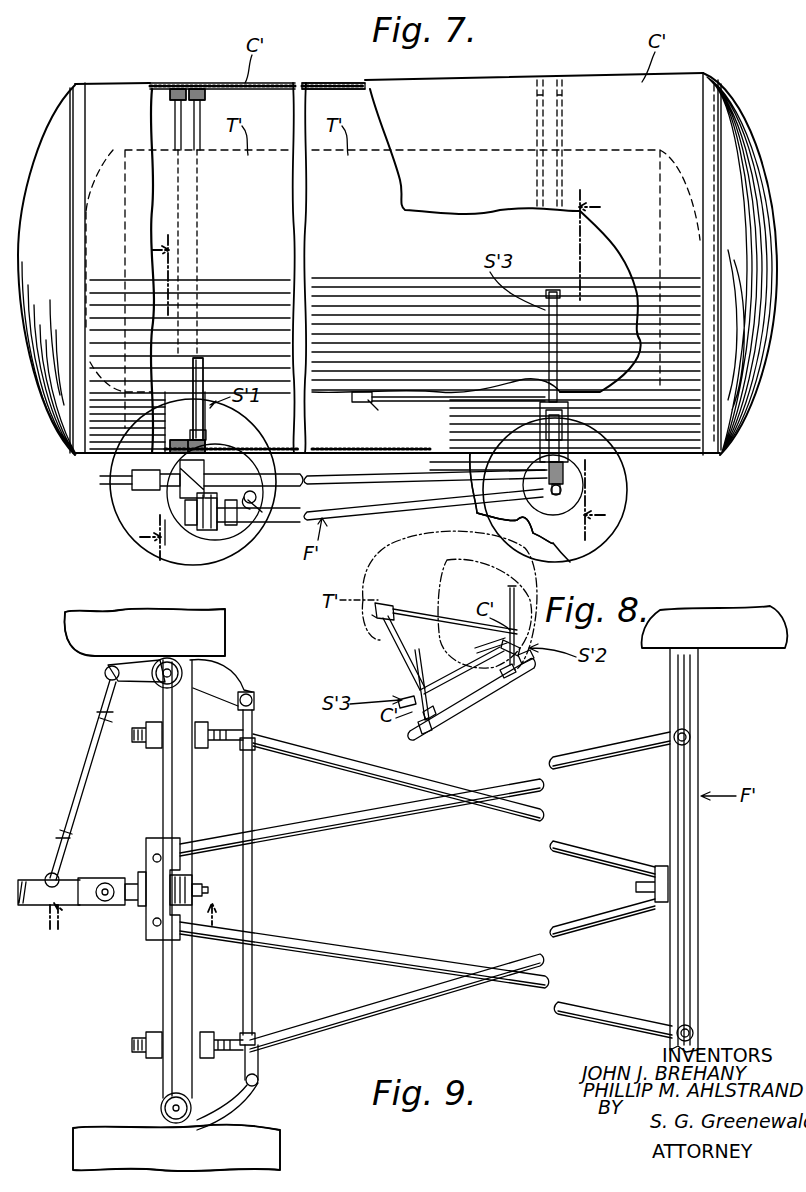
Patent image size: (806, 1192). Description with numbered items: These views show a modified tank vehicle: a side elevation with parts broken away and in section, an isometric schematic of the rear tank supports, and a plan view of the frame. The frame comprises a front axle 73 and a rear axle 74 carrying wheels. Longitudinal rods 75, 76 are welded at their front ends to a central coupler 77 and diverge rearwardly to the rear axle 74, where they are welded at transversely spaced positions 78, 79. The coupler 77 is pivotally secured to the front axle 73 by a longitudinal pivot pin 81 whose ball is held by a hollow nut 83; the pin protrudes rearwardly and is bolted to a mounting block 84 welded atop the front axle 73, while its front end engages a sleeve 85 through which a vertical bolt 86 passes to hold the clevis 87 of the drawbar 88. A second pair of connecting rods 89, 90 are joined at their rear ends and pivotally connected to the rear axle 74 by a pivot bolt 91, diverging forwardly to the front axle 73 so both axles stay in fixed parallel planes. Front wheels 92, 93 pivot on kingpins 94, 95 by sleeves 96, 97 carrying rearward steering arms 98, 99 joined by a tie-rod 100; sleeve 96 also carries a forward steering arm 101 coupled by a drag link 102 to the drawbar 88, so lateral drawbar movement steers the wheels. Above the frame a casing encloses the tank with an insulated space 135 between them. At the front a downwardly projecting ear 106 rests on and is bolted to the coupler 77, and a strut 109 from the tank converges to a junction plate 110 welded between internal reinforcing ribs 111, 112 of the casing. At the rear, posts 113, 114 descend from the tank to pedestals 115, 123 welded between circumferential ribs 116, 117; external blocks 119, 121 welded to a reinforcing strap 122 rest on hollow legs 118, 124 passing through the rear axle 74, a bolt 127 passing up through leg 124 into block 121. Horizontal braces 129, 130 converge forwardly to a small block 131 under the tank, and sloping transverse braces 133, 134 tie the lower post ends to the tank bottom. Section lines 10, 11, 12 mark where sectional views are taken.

In FIG. 7, the section line 10- 10 is at (139, 396).
In FIG. 7, the section line 11- 11 is at (607, 365).
In FIG. 9, the section line 12- 12 is at (144, 919).
In FIG. 7, the front axle 73 is at (216, 532).
In FIG. 9, the front axle 73 is at (164, 792).
In FIG. 7, the rear axle 74 is at (560, 500).
In FIG. 8, the rear axle 74 is at (494, 700).
In FIG. 9, the rear axle 74 is at (698, 952).
In FIG. 9, the longitudinal rod 75 is at (374, 828).
In FIG. 7, the longitudinal rod 76 is at (308, 472).
In FIG. 9, the longitudinal rod 76 is at (368, 944).
In FIG. 7, the coupler 77 is at (185, 488).
In FIG. 9, the coupler 77 is at (146, 856).
In FIG. 9, the transversely spaced position 78 is at (676, 732).
In FIG. 9, the transversely spaced position 79 is at (692, 1026).
In FIG. 9, the longitudinal pivot pin 81 is at (208, 888).
In FIG. 9, the hollow nut 83 is at (138, 902).
In FIG. 7, the mounting block 84 is at (205, 530).
In FIG. 9, the mounting block 84 is at (194, 886).
In FIG. 7, the sleeve 85 is at (140, 482).
In FIG. 9, the vertical bolt 86 is at (104, 882).
In FIG. 9, the clevis 87 is at (92, 905).
In FIG. 7, the drawbar 88 is at (100, 479).
In FIG. 9, the drawbar 88 is at (32, 878).
In FIG. 7, the connecting rod 89 is at (258, 520).
In FIG. 9, the connecting rod 89 is at (334, 764).
In FIG. 7, the connecting rod 90 is at (350, 512).
In FIG. 9, the connecting rod 90 is at (386, 1010).
In FIG. 9, the longitudinal pivot bolt 91 is at (636, 887).
In FIG. 7, the front wheel 92 is at (170, 545).
In FIG. 9, the front wheel 92 is at (92, 642).
In FIG. 9, the front wheel 93 is at (100, 1140).
In FIG. 9, the kingpin 94 is at (172, 668).
In FIG. 9, the kingpin 95 is at (180, 1112).
In FIG. 9, the sleeve 96 is at (160, 662).
In FIG. 9, the sleeve 97 is at (164, 1118).
In FIG. 7, the steering arm 98 is at (248, 523).
In FIG. 9, the steering arm 98 is at (232, 680).
In FIG. 9, the steering arm 99 is at (236, 1098).
In FIG. 7, the tie-rod 100 is at (254, 505).
In FIG. 9, the tie-rod 100 is at (256, 982).
In FIG. 9, the steering arm 101 is at (138, 680).
In FIG. 9, the drag link 102 is at (82, 756).
In FIG. 7, the ear 106 is at (222, 470).
In FIG. 7, the strut 109 is at (200, 376).
In FIG. 7, the junction plate 110 is at (205, 433).
In FIG. 7, the internal reinforcing rib 111 is at (165, 88).
In FIG. 7, the internal reinforcing rib 112 is at (208, 88).
In FIG. 7, the post 113 is at (558, 325).
In FIG. 8, the post 113 is at (412, 680).
In FIG. 8, the post 114 is at (510, 596).
In FIG. 7, the pedestal 115 is at (566, 405).
In FIG. 8, the pedestal 115 is at (440, 712).
In FIG. 7, the internal circumferential rib 116 is at (537, 116).
In FIG. 7, the internal circumferential rib 117 is at (562, 110).
In FIG. 7, the hollow leg 118 is at (565, 470).
In FIG. 8, the hollow leg 118 is at (430, 730).
In FIG. 7, the external block 119 is at (574, 430).
In FIG. 8, the external block 119 is at (408, 710).
In FIG. 8, the external block 121 is at (530, 664).
In FIG. 7, the reinforcing strap 122 is at (522, 460).
In FIG. 8, the pedestal 123 is at (522, 648).
In FIG. 8, the hollow leg 124 is at (512, 680).
In FIG. 7, the bolt 127 is at (528, 516).
In FIG. 7, the longitudinal brace 129 is at (420, 403).
In FIG. 8, the longitudinal brace 129 is at (396, 650).
In FIG. 8, the longitudinal brace 130 is at (430, 615).
In FIG. 7, the block 131 is at (362, 405).
In FIG. 8, the block 131 is at (392, 600).
In FIG. 8, the transverse brace 133 is at (466, 672).
In FIG. 8, the transverse brace 134 is at (478, 648).
In FIG. 7, the space 135 is at (314, 100).